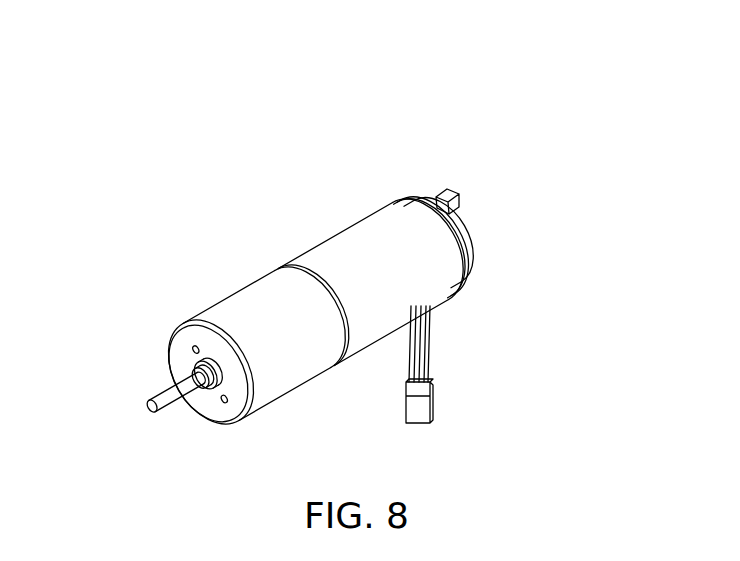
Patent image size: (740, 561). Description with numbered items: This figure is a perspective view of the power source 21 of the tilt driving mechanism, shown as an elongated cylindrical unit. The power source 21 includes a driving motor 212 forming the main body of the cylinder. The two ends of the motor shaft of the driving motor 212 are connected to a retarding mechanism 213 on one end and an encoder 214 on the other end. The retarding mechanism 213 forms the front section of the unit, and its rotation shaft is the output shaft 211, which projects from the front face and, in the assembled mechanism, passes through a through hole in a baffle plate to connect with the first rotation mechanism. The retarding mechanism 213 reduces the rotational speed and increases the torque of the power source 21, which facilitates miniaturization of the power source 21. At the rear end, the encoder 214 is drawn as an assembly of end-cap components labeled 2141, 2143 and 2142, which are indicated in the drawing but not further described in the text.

The power source 21 is at (172, 62).
The output shaft 211 is at (168, 392).
The driving motor 212 is at (358, 252).
The retarding mechanism 213 is at (247, 315).
The encoder 214 is at (590, 163).
The rear cap ring 2141 is at (458, 271).
The terminal block 2142 is at (452, 203).
The end cap 2143 is at (460, 231).